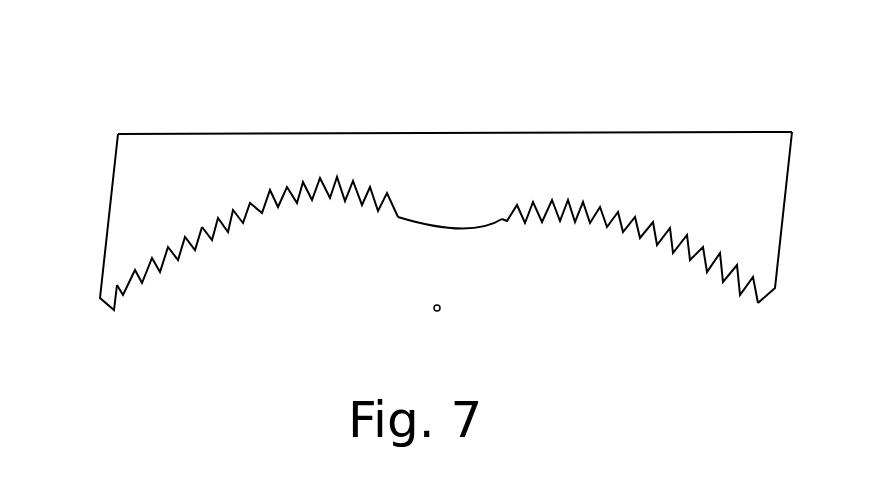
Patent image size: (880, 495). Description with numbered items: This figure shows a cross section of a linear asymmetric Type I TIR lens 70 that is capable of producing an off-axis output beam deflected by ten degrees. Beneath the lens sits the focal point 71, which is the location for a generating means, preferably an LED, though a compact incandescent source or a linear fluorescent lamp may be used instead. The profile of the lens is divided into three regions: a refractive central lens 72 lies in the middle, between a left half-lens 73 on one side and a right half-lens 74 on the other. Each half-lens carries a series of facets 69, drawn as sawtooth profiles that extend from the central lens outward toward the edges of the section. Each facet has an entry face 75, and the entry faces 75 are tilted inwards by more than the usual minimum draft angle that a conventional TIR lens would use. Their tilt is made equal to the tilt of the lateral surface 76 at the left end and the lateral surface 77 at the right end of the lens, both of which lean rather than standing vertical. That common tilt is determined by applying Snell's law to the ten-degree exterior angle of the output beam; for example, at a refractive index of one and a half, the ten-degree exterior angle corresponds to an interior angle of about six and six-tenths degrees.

The facets 69 is at (532, 188).
The linear asymmetric Type I TIR lens 70 is at (161, 116).
The focal point 71 is at (415, 314).
The refractive central lens 72 is at (470, 244).
The left half-lens 73 is at (257, 270).
The right half-lens 74 is at (630, 251).
The entry faces 75 is at (318, 204).
The tilted lateral surface 76 is at (93, 222).
The tilted lateral surface 77 is at (789, 217).